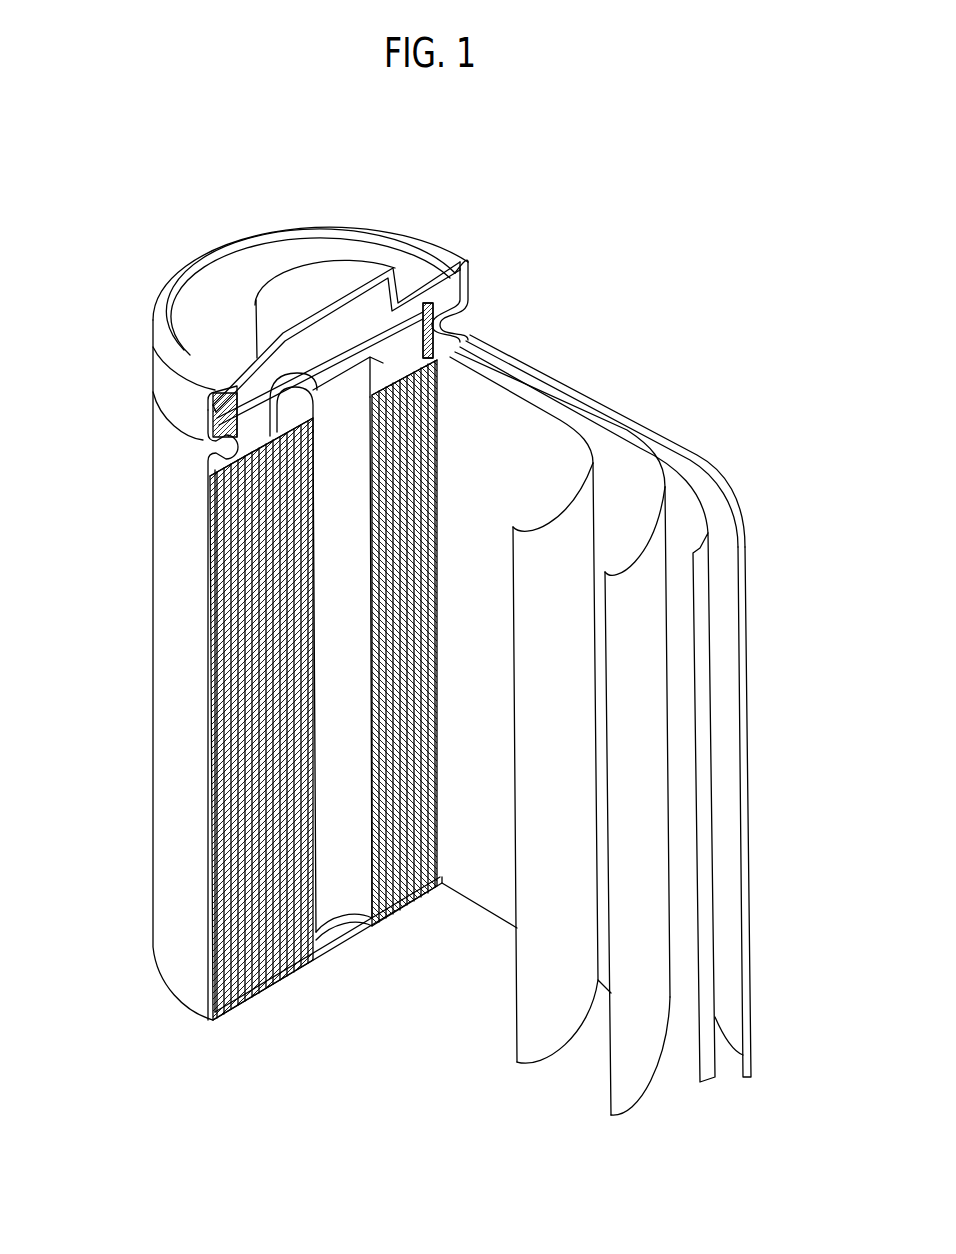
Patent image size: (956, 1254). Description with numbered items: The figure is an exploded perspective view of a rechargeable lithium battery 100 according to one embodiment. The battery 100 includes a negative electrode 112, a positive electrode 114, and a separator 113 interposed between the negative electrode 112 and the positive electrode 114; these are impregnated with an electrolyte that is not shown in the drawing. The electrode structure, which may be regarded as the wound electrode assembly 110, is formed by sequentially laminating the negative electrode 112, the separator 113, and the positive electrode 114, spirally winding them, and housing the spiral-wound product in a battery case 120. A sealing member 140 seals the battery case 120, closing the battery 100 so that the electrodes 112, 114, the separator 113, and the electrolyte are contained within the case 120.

The rechargeable lithium battery 100 is at (521, 226).
The electrode assembly 110 is at (323, 690).
The negative electrode 112 is at (713, 483).
The separator 113 is at (537, 415).
The positive electrode 114 is at (600, 450).
The battery case 120 is at (158, 573).
The sealing member 140 is at (313, 279).